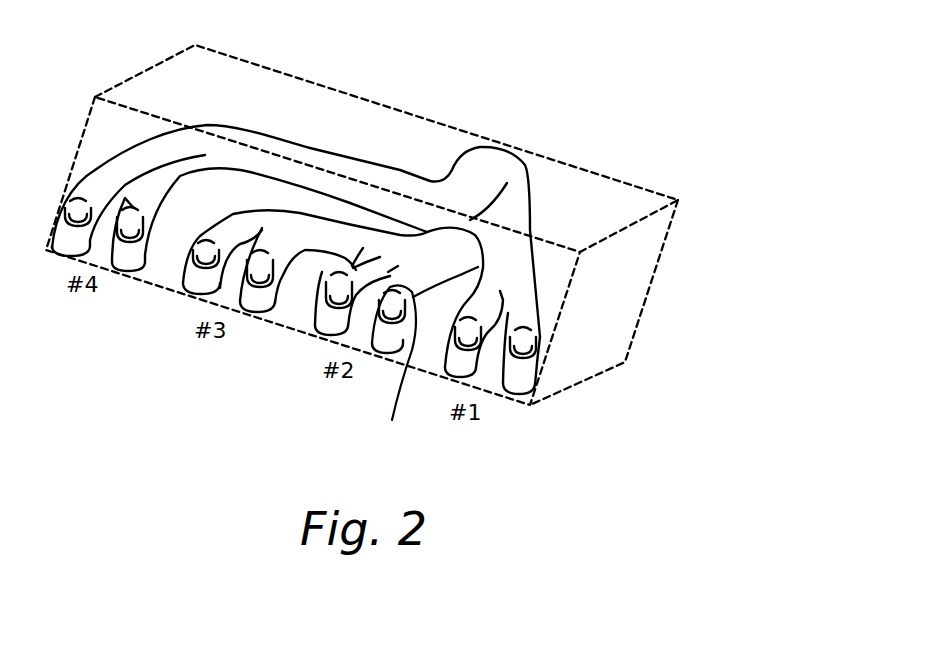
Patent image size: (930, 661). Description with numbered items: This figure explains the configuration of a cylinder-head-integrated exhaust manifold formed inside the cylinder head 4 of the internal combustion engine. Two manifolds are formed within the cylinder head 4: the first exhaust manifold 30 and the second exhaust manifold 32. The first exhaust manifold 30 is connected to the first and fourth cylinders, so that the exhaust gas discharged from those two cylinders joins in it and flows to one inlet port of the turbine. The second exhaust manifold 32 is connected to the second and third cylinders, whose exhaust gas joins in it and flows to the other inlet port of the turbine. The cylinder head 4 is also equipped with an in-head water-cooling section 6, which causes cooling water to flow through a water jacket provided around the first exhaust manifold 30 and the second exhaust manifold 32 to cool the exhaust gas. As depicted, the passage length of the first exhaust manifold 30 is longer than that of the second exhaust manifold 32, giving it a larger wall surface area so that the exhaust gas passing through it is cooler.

The cylinder head 4 is at (126, 56).
The in-head water-cooling section 6 is at (623, 287).
The first exhaust manifold 30 is at (543, 337).
The second exhaust manifold 32 is at (394, 371).